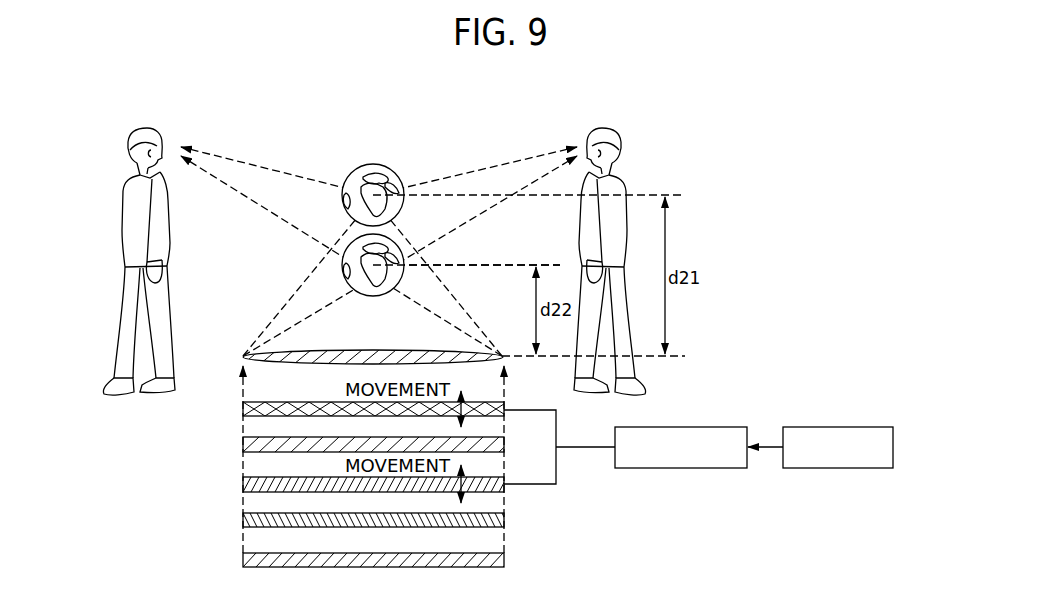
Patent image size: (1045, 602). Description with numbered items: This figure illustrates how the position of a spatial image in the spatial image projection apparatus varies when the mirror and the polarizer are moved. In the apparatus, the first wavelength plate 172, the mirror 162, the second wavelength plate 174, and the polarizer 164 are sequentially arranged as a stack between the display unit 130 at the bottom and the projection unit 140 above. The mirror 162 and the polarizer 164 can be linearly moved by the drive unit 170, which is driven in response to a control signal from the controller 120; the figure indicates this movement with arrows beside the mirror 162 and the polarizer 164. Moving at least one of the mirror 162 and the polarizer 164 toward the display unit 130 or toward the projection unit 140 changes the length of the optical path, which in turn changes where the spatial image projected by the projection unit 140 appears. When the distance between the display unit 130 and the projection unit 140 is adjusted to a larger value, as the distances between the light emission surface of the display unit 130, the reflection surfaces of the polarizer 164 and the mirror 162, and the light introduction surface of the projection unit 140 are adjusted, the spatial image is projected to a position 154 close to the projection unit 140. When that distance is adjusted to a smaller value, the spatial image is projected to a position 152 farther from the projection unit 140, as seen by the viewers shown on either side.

The controller 120 is at (855, 427).
The display unit 130 is at (506, 560).
The projection unit 140 is at (500, 352).
The position distant from the projection unit 152 is at (394, 164).
The position close to the projection unit 154 is at (377, 297).
The mirror 162 is at (243, 484).
The polarizer 164 is at (243, 410).
The drive unit 170 is at (710, 427).
The first wavelength plate 172 is at (243, 519).
The second wavelength plate 174 is at (243, 444).